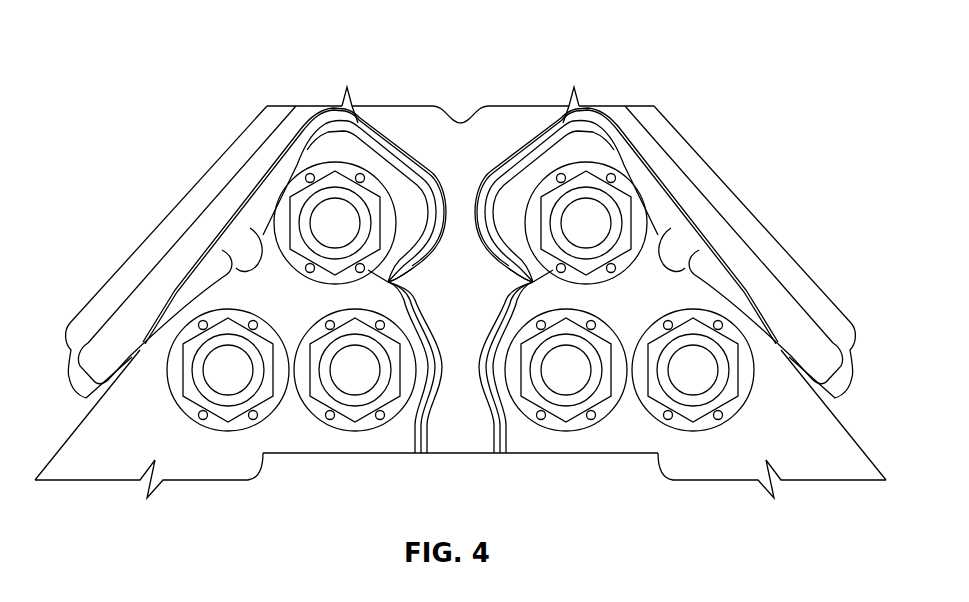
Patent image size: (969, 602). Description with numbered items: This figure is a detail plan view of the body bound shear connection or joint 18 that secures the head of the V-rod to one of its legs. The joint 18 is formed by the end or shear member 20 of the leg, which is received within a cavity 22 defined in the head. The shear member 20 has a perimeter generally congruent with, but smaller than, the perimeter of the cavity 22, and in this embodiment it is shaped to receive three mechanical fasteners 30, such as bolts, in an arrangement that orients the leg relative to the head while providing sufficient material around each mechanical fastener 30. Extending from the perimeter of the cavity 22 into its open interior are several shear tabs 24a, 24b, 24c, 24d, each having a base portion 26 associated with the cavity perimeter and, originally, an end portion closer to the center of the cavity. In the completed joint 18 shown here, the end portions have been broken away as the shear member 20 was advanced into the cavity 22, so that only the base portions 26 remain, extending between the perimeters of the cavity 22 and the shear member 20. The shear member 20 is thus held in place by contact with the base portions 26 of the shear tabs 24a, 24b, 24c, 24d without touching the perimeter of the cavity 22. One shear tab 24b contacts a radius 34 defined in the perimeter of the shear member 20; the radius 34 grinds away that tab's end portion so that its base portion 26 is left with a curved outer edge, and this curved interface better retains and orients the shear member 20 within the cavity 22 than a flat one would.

The body bound shear connection or joint 18 is at (360, 116).
The end or shear member of the leg 20 is at (100, 467).
The cavity 22 is at (398, 443).
The shear tab 24a is at (300, 163).
The shear tab 24b is at (220, 252).
The shear tab 24c is at (138, 345).
The shear tab 24d is at (398, 262).
The base portion 26 is at (460, 226).
The mechanical fasteners 30 is at (332, 195).
The radius 34 is at (218, 246).